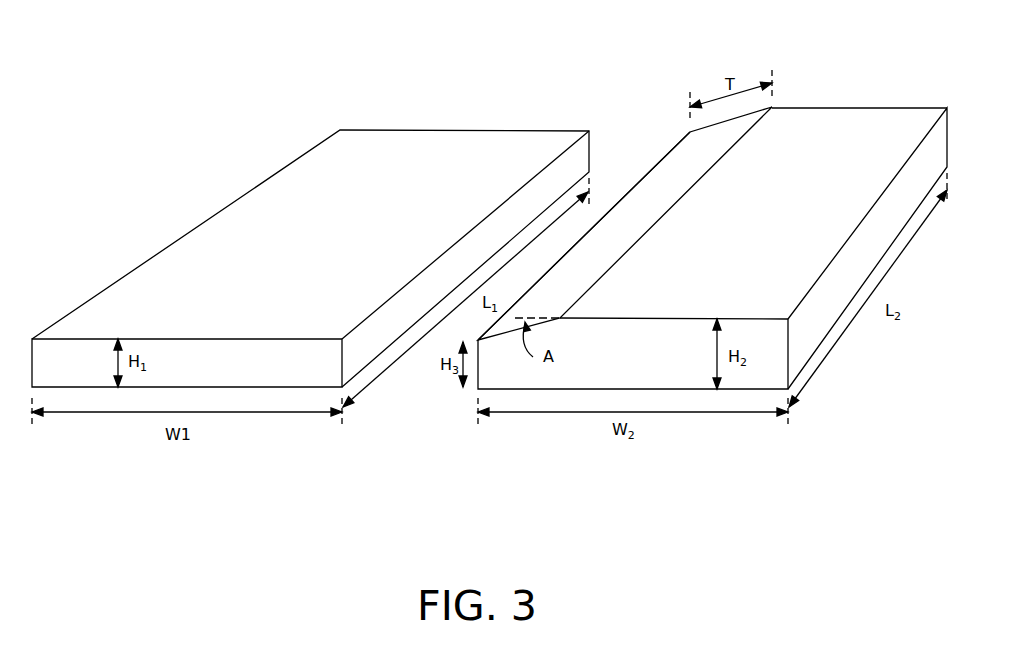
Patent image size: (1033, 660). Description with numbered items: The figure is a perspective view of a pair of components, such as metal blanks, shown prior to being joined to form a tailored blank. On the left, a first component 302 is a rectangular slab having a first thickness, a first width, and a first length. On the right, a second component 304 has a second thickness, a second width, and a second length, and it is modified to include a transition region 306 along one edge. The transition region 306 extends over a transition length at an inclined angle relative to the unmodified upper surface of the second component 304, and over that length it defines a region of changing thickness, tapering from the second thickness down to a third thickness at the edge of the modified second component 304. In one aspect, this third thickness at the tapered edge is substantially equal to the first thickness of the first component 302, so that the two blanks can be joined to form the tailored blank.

The first component 302 is at (302, 188).
The second component 304 is at (870, 118).
The transition region 306 is at (637, 227).